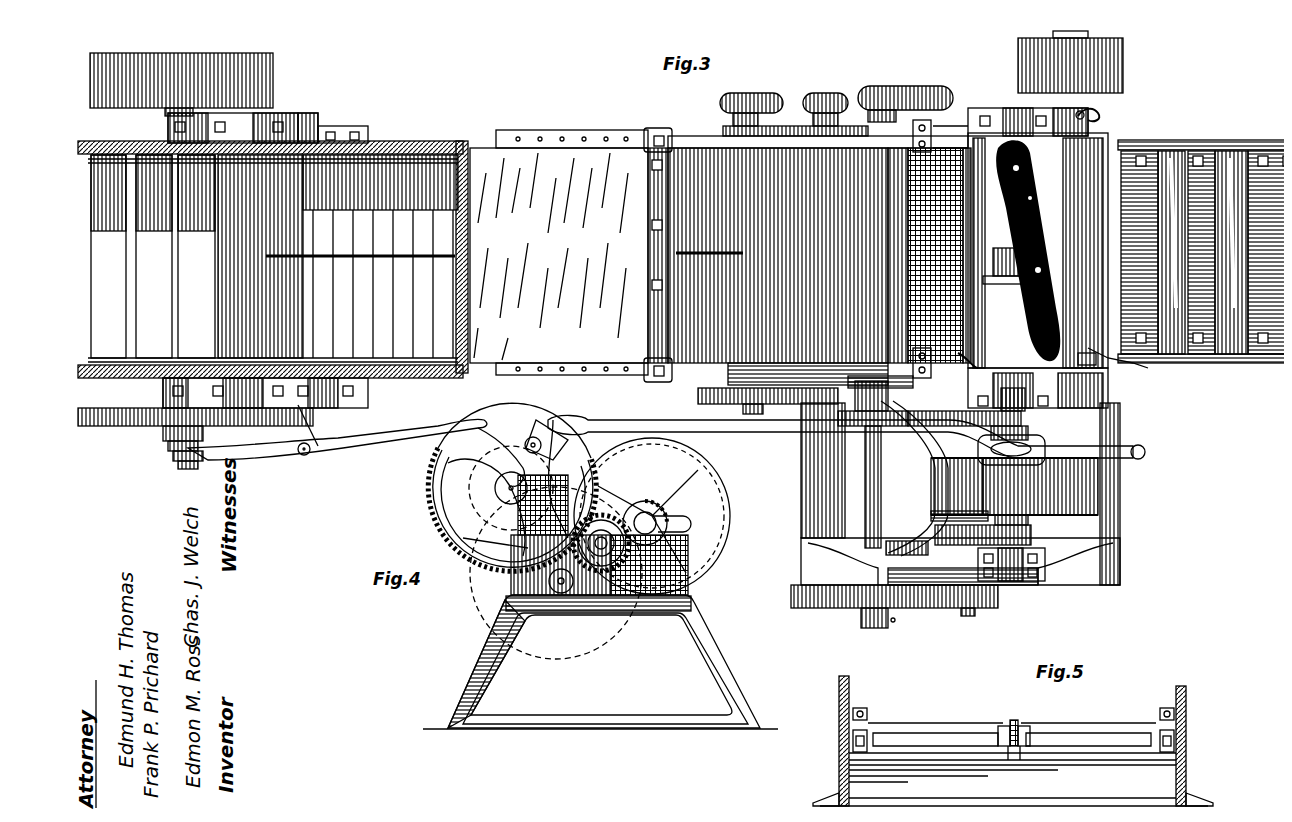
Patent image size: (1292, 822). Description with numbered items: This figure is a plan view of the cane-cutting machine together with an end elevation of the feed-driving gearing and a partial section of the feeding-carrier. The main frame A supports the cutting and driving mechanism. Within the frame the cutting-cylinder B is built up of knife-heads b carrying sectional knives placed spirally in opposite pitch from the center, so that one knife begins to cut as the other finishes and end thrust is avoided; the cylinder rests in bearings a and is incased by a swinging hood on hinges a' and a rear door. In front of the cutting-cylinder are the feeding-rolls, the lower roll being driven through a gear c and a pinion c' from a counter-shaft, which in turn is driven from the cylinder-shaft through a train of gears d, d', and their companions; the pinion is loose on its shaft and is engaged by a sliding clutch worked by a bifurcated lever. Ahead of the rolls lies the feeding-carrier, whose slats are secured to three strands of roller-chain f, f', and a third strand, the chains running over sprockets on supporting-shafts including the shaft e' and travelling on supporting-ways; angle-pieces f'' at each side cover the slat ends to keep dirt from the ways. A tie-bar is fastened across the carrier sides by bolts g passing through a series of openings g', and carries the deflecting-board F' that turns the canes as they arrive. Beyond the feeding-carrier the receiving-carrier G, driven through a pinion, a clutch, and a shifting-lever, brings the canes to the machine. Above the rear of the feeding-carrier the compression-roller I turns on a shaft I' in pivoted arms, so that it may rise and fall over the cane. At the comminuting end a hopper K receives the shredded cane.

In FIG. 3, the main frame A is at (962, 341).
In FIG. 4, the main frame A is at (601, 640).
In FIG. 3, the cutting-cylinder B is at (1018, 250).
In FIG. 3, the drum B' is at (1014, 486).
In FIG. 4, the drum B' is at (666, 516).
In FIG. 3, the feeding-carrier section E' is at (493, 246).
In FIG. 5, the feeding-carrier section E' is at (935, 722).
In FIG. 3, the deflecting-board F' is at (572, 336).
In FIG. 3, the receiving-carrier G is at (273, 258).
In FIG. 3, the hub G'' is at (147, 439).
In FIG. 3, the compression-roller I is at (808, 212).
In FIG. 3, the shaft I' is at (795, 90).
In FIG. 3, the shaft I'' is at (775, 72).
In FIG. 3, the hopper K is at (1265, 222).
In FIG. 3, the bearings a is at (1021, 344).
In FIG. 3, the hinges a' is at (930, 226).
In FIG. 3, the knife-heads b is at (998, 160).
In FIG. 3, the gear c is at (943, 437).
In FIG. 3, the pinion c' is at (875, 426).
In FIG. 3, the hub c'' is at (903, 397).
In FIG. 4, the gear d is at (666, 521).
In FIG. 3, the gear d' is at (907, 532).
In FIG. 3, the supporting-shaft e' is at (244, 117).
In FIG. 5, the chain f is at (874, 746).
In FIG. 5, the chain f' is at (1031, 754).
In FIG. 5, the screw f'' is at (1013, 690).
In FIG. 3, the fastening-bolts g is at (658, 254).
In FIG. 3, the openings g' is at (572, 254).
In FIG. 3, the pinion n is at (185, 462).